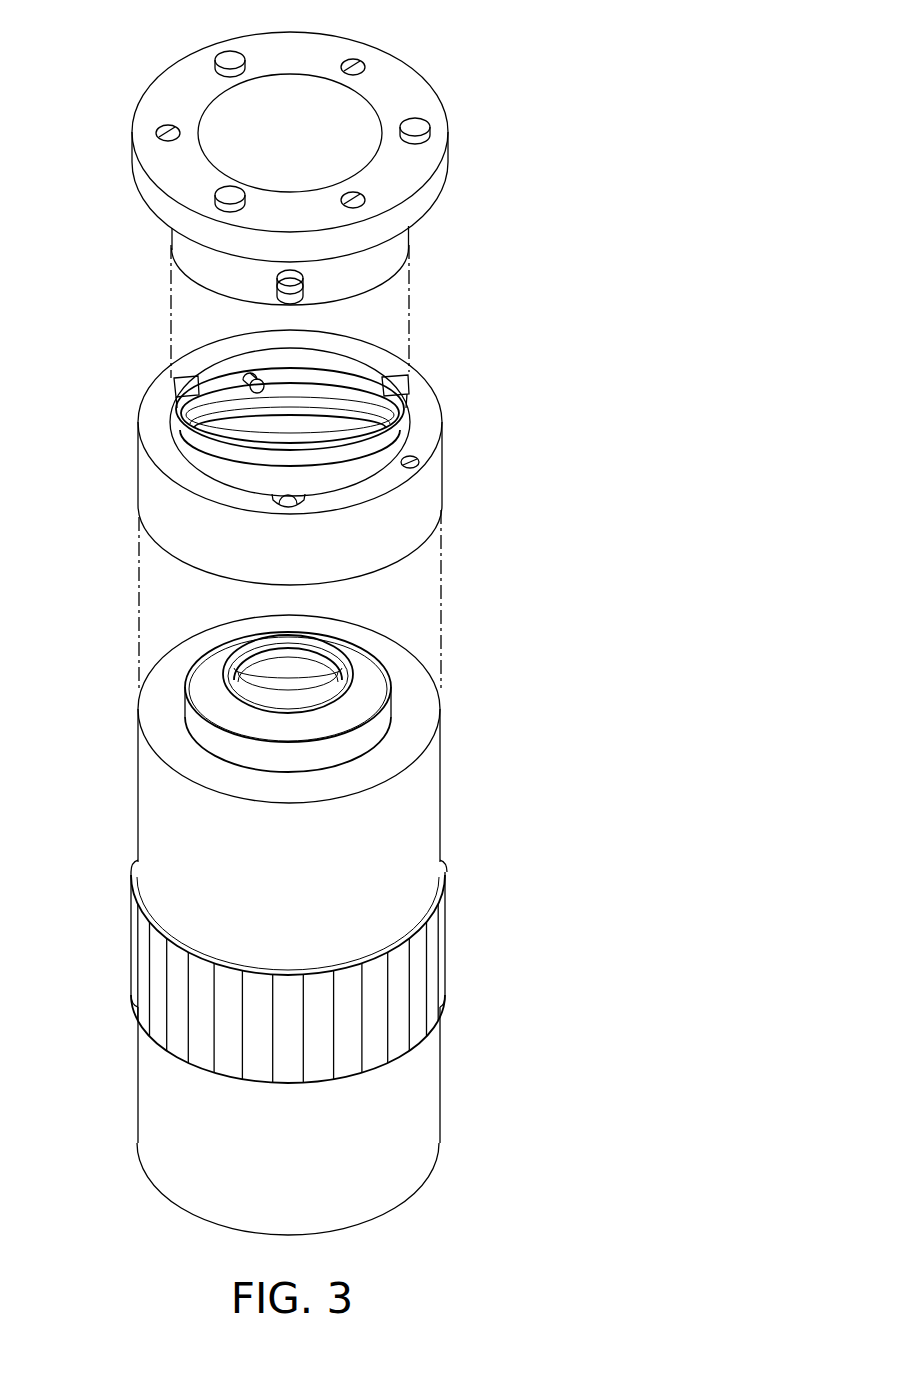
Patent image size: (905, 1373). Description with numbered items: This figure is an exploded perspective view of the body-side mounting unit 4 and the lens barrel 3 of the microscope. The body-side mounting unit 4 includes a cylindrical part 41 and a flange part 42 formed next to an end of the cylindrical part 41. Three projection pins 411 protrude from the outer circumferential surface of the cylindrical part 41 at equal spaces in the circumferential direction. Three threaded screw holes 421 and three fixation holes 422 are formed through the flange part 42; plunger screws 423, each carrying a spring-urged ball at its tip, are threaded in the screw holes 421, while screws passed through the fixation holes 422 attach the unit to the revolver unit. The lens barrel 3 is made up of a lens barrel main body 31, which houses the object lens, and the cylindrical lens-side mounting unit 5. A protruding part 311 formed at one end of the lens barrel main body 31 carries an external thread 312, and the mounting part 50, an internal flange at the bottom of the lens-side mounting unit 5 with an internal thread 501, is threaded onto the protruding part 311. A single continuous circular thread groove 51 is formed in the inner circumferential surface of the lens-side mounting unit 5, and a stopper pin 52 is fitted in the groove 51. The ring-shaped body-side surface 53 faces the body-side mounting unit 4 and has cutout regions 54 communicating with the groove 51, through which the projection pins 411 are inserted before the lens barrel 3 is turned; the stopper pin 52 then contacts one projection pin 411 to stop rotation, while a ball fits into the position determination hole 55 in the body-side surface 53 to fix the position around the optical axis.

The lens barrel 3 is at (520, 390).
The body-side mounting unit 4 is at (497, 62).
The cylindrical part 41 is at (390, 256).
The projection pin 411 is at (305, 279).
The flange part 42 is at (445, 178).
The threaded screw hole 421 is at (247, 63).
The fixation hole 422 is at (362, 63).
The plunger screw 423 is at (231, 52).
The lens-side mounting unit 5 is at (430, 487).
The mounting part 50 is at (205, 447).
The internal thread 501 is at (308, 424).
The thread groove 51 is at (348, 390).
The stopper pin 52 is at (252, 376).
The body-side surface 53 is at (423, 400).
The cutout region 54 is at (188, 380).
The position determination hole 55 is at (412, 462).
The lens barrel main body 31 is at (433, 815).
The protruding part 311 is at (358, 648).
The external thread 312 is at (363, 735).